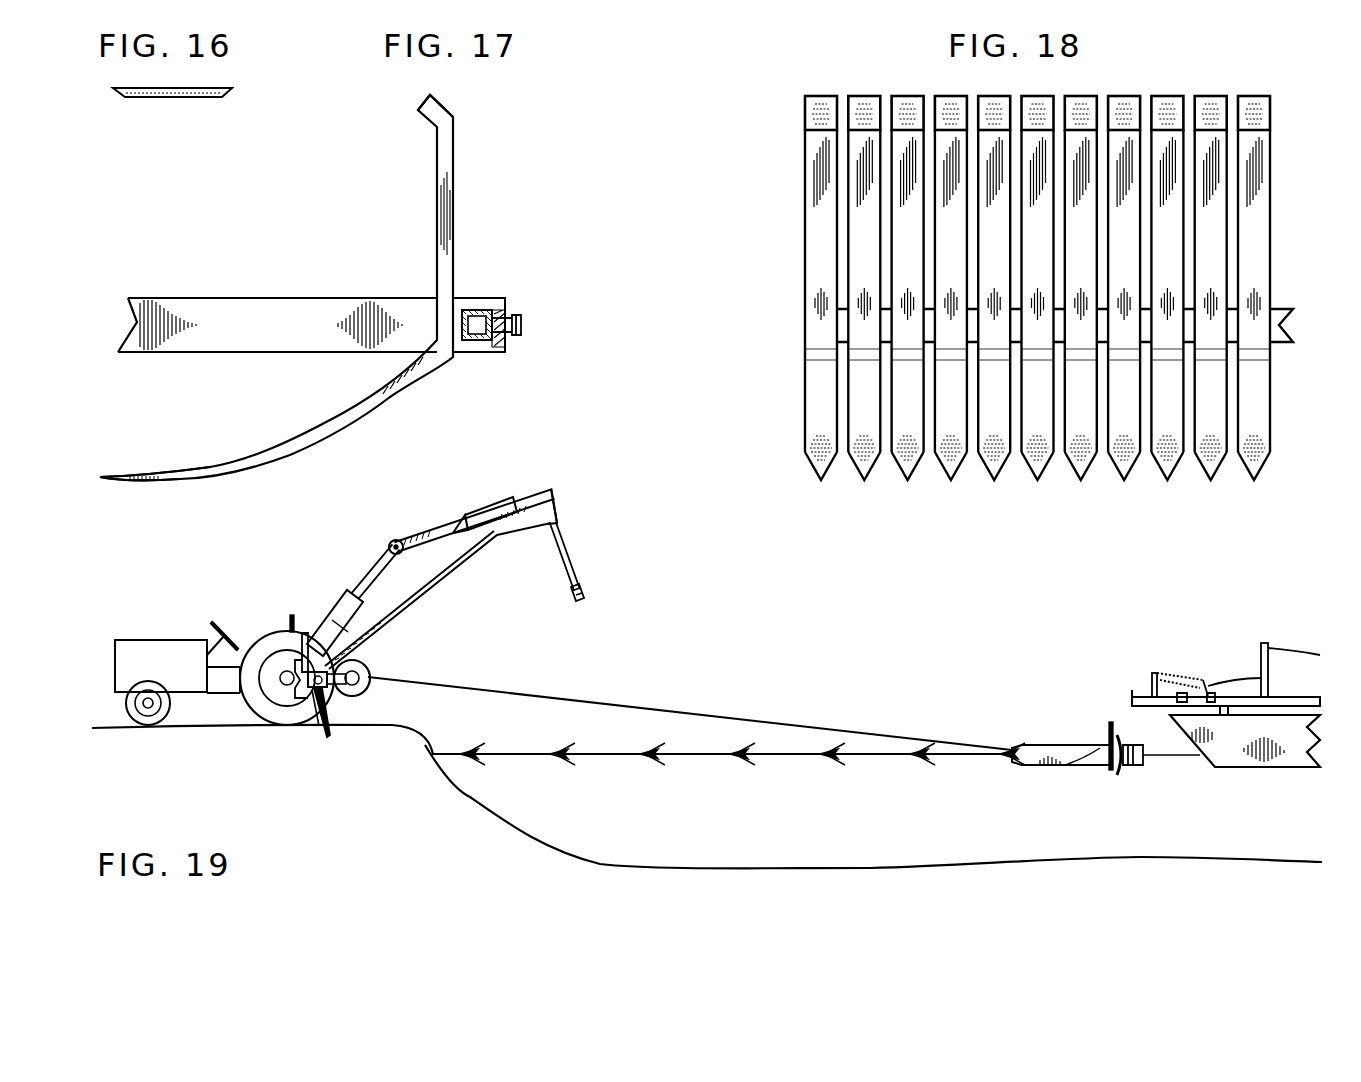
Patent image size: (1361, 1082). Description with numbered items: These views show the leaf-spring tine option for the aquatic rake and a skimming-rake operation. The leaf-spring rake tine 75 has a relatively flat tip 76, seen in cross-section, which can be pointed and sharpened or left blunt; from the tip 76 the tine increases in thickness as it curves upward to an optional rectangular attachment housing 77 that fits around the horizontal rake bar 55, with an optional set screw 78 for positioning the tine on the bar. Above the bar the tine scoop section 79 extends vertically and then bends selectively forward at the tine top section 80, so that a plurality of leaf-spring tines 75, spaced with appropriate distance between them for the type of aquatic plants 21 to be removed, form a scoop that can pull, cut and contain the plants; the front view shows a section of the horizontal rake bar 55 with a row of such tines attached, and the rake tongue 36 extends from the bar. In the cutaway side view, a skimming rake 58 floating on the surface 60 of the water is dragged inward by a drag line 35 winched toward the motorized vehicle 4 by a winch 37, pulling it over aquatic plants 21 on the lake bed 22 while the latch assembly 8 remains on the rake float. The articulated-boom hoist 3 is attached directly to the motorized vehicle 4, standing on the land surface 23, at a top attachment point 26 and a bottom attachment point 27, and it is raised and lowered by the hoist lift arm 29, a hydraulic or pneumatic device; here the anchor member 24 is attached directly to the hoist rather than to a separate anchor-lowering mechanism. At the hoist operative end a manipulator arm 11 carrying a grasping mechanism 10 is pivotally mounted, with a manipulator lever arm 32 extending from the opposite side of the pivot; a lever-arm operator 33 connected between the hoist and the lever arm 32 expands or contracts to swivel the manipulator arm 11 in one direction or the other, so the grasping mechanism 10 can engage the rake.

In FIG. 19, the articulated-boom hoist 3 is at (427, 512).
In FIG. 19, the motorized vehicle 4 is at (162, 646).
In FIG. 19, the latch assembly 8 is at (1167, 650).
In FIG. 19, the grasping mechanism 10 is at (582, 592).
In FIG. 19, the manipulator arm 11 is at (566, 543).
In FIG. 19, the aquatic plants 21 is at (903, 762).
In FIG. 19, the lake bed 22 is at (990, 865).
In FIG. 19, the land surface 23 is at (177, 730).
In FIG. 19, the anchor member 24 is at (330, 722).
In FIG. 19, the top attachment point 26 is at (309, 655).
In FIG. 19, the bottom attachment point 27 is at (320, 705).
In FIG. 19, the hoist lift arm 29 is at (330, 618).
In FIG. 19, the manipulator lever arm 32 is at (558, 497).
In FIG. 19, the lever-arm operator 33 is at (483, 505).
In FIG. 19, the drag line 35 is at (712, 707).
In FIG. 17, the rake tongue 36 is at (250, 308).
In FIG. 19, the winch 37 is at (364, 668).
In FIG. 17, the horizontal rake bar 55 is at (480, 312).
In FIG. 18, the horizontal rake bar 55 is at (845, 325).
In FIG. 19, the skimming rake 58 is at (1050, 722).
In FIG. 19, the surface of body of water 60 is at (872, 762).
In FIG. 17, the leaf-spring rake tine 75 is at (495, 183).
In FIG. 18, the leaf-spring rake tine 75 is at (734, 111).
In FIG. 16, the tip 76 is at (178, 97).
In FIG. 17, the tip 76 is at (140, 474).
In FIG. 18, the tip 76 is at (818, 442).
In FIG. 17, the rectangular attachment housing 77 is at (486, 298).
In FIG. 17, the set screw 78 is at (522, 325).
In FIG. 17, the tine scoop section 79 is at (418, 111).
In FIG. 18, the tine scoop section 79 is at (821, 98).
In FIG. 17, the tine top section 80 is at (444, 165).
In FIG. 18, the tine top section 80 is at (818, 187).